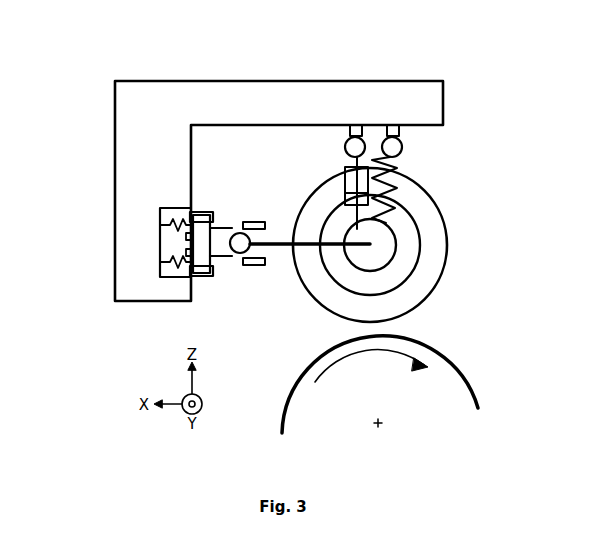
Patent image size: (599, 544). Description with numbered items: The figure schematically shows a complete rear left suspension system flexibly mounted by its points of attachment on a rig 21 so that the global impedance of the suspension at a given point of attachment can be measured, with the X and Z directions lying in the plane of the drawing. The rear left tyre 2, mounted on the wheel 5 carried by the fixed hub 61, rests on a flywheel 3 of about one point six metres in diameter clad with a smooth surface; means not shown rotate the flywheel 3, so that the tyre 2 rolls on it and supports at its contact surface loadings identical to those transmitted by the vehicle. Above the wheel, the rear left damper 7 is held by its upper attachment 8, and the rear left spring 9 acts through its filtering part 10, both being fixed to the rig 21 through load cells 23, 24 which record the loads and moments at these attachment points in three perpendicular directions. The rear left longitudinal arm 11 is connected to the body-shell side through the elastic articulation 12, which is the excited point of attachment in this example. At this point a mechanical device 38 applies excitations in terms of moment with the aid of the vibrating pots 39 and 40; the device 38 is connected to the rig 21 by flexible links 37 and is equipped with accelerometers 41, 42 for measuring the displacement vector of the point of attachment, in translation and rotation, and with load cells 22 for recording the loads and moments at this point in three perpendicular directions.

The rig 21 is at (148, 123).
The load cells 22 is at (189, 213).
The flexible links 37 is at (168, 224).
The accelerometer 41 is at (186, 237).
The accelerometer 42 is at (186, 252).
The mechanical device 38 is at (218, 260).
The vibrating pot 39 is at (256, 222).
The vibrating pot 40 is at (258, 266).
The elastic articulation 12 is at (240, 254).
The rear left longitudinal arm 11 is at (278, 247).
The rear left tyre 2 is at (427, 265).
The wheel 5 is at (408, 239).
The fixed hub 61 is at (378, 253).
The load cell 23 is at (353, 130).
The load cell 24 is at (392, 130).
The upper attachment 8 is at (350, 149).
The filtering part 10 is at (403, 145).
The rear left damper 7 is at (357, 192).
The rear left spring 9 is at (386, 183).
The flywheel 3 is at (335, 387).